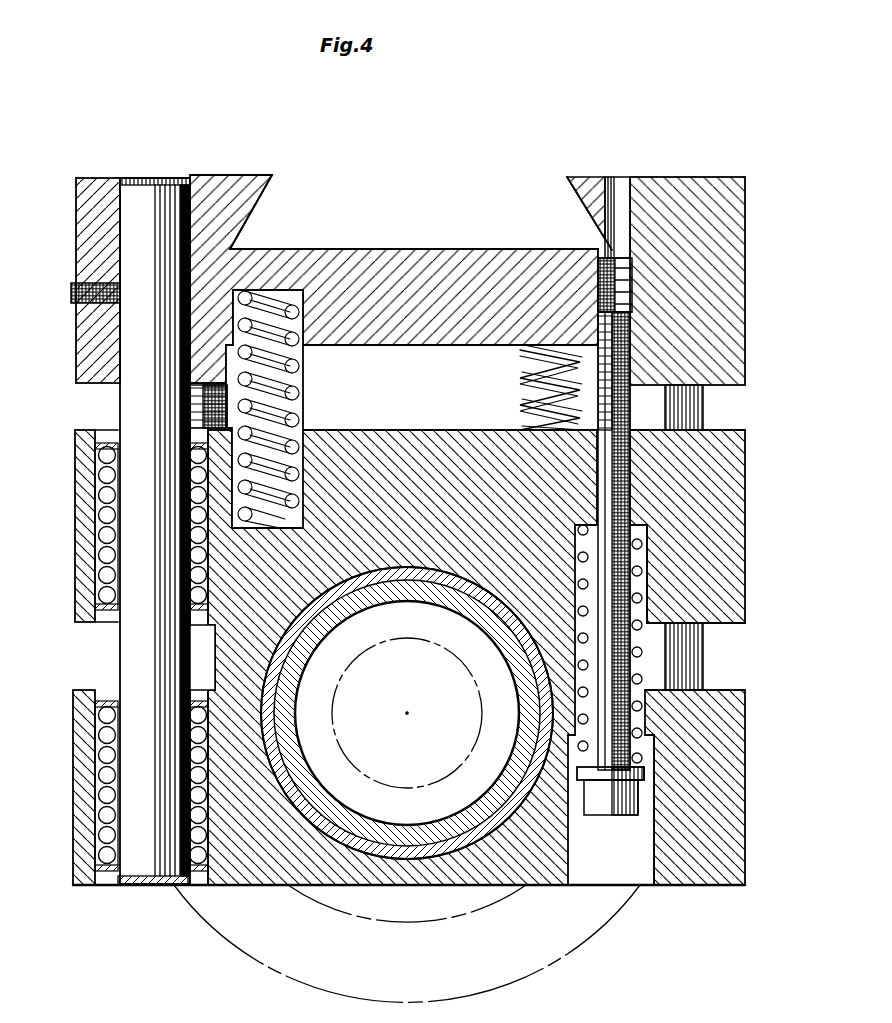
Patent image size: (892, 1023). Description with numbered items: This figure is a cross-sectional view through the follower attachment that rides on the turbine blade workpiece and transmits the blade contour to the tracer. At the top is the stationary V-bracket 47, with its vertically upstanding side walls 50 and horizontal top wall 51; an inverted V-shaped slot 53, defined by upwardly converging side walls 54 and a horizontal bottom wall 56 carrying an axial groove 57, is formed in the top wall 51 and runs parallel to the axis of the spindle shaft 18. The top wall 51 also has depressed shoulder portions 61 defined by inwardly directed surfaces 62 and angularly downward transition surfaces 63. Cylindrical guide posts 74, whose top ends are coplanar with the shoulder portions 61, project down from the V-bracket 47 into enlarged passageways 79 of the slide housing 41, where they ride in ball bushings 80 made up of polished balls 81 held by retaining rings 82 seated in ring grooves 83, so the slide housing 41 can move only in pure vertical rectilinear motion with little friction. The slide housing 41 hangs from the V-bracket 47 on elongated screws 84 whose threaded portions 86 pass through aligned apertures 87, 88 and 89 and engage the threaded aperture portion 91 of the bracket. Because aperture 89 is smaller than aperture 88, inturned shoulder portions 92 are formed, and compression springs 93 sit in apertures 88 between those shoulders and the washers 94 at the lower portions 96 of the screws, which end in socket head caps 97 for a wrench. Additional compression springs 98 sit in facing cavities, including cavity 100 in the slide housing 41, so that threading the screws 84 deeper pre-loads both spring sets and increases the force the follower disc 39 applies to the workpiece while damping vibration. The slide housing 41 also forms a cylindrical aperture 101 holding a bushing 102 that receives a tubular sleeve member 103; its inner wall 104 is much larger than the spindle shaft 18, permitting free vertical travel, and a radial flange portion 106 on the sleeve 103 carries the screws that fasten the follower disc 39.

The spindle shaft 18 is at (333, 725).
The follower disc 39 is at (285, 980).
The slide housing 41 is at (75, 508).
The V-bracket 47 is at (748, 240).
The side walls 50 is at (632, 290).
The top wall 51 is at (262, 178).
The inverted V-portion shaped slot 53 is at (577, 192).
The upwardly converging side walls 54 is at (257, 210).
The bottom wall 56 is at (300, 249).
The groove 57 is at (408, 250).
The depressed shoulder portions 61 is at (78, 178).
The inwardly directed surfaces 62 is at (92, 178).
The transition surfaces 63 is at (172, 178).
The guide posts 74 is at (128, 400).
The enlarged diameter passageways 79 is at (205, 600).
The ball bushings 80 is at (98, 480).
The balls 81 is at (100, 552).
The retaining rings 82 is at (110, 443).
The ring grooves 83 is at (78, 440).
The elongated screws 84 is at (608, 494).
The threaded portions 86 is at (632, 388).
The aperture 87 is at (657, 788).
The aperture 88 is at (645, 582).
The aperture 89 is at (632, 510).
The threaded aperture portion 91 is at (632, 292).
The inturned shoulder portions 92 is at (640, 530).
The compression springs 93 is at (640, 658).
The flange portions or washers 94 is at (640, 768).
The lower portions 96 is at (585, 810).
The socket head caps 97 is at (628, 815).
The additional compression springs 98 is at (298, 398).
The cavity 100 is at (302, 450).
The aperture 101 is at (434, 575).
The bushing 102 is at (378, 578).
The tubular sleeve member 103 is at (455, 602).
The inner wall 104 is at (462, 808).
The flange portion 106 is at (405, 920).